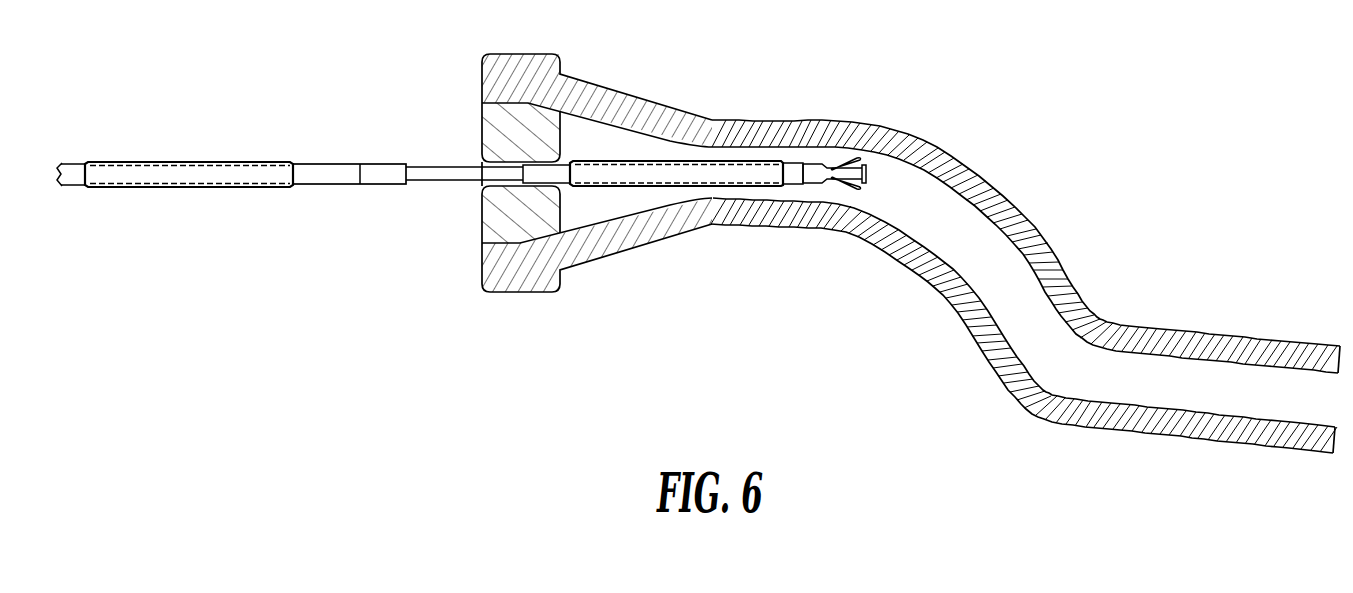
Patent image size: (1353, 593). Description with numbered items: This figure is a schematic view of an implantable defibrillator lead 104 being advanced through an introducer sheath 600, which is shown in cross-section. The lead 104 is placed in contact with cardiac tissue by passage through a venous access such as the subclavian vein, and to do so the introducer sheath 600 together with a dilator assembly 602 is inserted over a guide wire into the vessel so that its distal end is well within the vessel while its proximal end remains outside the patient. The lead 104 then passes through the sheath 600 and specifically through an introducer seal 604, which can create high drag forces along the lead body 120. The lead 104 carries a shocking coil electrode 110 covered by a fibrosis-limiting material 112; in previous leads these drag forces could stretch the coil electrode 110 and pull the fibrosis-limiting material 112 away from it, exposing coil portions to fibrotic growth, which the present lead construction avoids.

The implantable defibrillator lead 104 is at (461, 160).
The shocking coil electrode 110 is at (128, 177).
The fibrosis-limiting material 112 is at (192, 162).
The lead body 120 is at (332, 163).
The introducer sheath 600 is at (767, 120).
The dilator assembly 602 is at (612, 275).
The introducer seal 604 is at (492, 222).